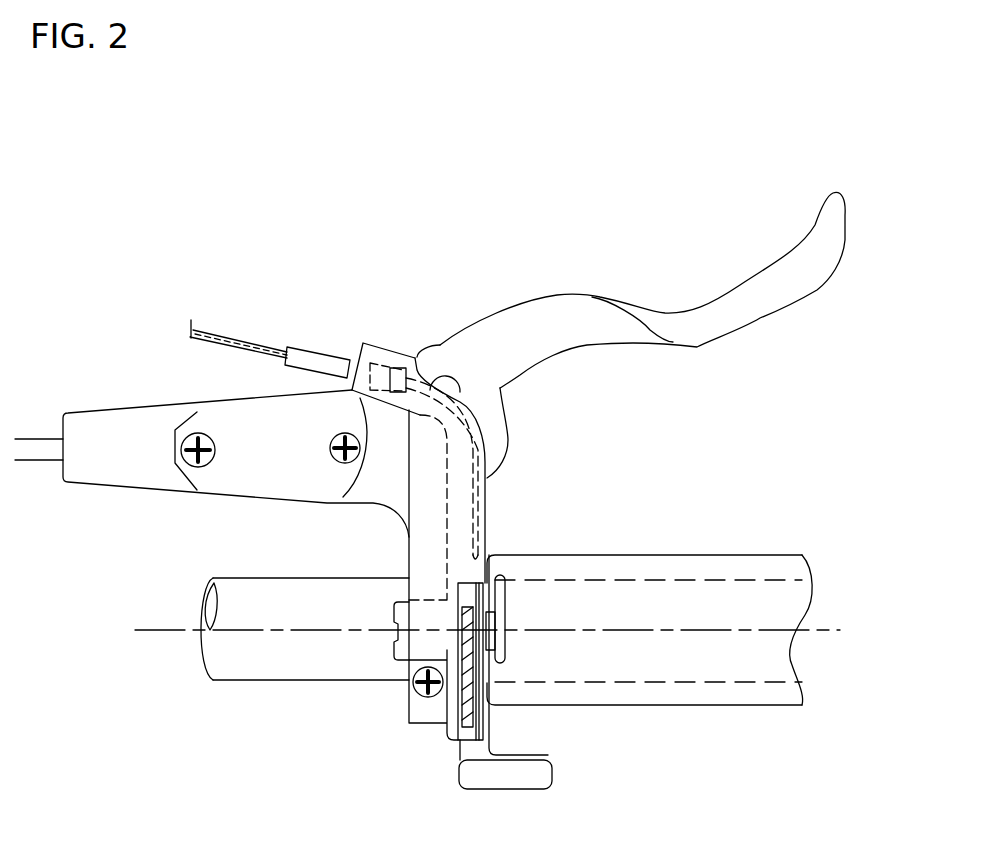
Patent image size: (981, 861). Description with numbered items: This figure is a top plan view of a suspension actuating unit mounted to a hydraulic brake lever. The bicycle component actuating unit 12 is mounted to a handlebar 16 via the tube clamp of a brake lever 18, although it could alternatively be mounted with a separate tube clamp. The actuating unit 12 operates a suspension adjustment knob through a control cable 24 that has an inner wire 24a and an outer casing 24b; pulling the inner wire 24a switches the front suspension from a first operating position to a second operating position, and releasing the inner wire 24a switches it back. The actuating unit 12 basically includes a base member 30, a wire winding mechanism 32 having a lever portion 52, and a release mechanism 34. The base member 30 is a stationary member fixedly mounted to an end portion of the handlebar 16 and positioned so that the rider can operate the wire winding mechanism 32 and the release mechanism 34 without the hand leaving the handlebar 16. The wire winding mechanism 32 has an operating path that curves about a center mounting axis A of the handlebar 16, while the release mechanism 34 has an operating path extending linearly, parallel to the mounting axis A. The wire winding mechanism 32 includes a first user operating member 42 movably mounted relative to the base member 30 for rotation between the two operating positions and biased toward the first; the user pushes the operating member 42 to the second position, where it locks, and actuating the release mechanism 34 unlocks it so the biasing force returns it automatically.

The bicycle component actuating unit 12 is at (393, 719).
The handlebar 16 is at (253, 683).
The brake lever 18 is at (227, 500).
The control cable 24 is at (302, 312).
The inner wire 24a is at (241, 337).
The outer casing 24b is at (350, 337).
The base member 30 is at (495, 504).
The wire winding mechanism 32 is at (530, 806).
The release mechanism 34 is at (520, 603).
The first user operating member 42 is at (495, 724).
The lever portion 52 is at (555, 773).
The center mounting axis A is at (636, 628).